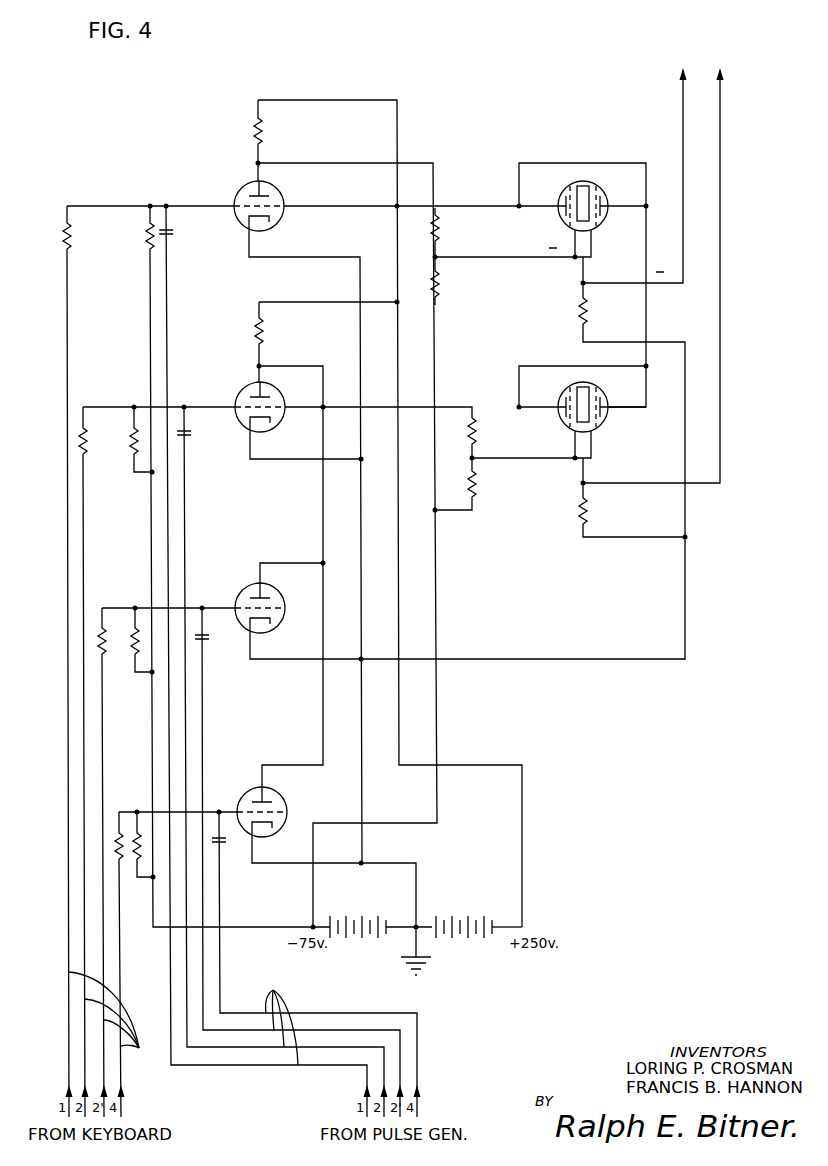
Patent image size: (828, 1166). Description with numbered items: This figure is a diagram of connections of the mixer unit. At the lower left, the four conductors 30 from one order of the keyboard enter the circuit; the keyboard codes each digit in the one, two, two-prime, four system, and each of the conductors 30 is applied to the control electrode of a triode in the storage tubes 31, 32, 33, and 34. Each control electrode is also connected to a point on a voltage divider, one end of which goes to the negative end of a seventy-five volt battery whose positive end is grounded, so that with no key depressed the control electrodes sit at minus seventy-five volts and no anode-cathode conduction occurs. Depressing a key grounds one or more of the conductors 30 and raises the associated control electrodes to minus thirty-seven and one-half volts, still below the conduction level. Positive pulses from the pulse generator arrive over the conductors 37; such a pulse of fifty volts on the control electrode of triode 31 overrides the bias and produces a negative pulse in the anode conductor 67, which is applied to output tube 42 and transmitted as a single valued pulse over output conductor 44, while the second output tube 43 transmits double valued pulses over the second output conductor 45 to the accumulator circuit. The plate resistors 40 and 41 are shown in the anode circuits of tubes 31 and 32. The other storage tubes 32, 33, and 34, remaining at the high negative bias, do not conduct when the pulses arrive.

The conductors 30 is at (109, 1022).
The storage tube 31 is at (273, 198).
The storage tube 32 is at (274, 400).
The storage tube 33 is at (274, 604).
The storage tube 34 is at (281, 806).
The conductors 37 is at (280, 1019).
The plate resistor 40 is at (254, 134).
The plate resistor 41 is at (254, 338).
The output tube 42 is at (571, 189).
The output tube 43 is at (570, 392).
The output conductor 44 is at (682, 93).
The output conductor 45 is at (722, 93).
The anode conductor 67 is at (430, 163).